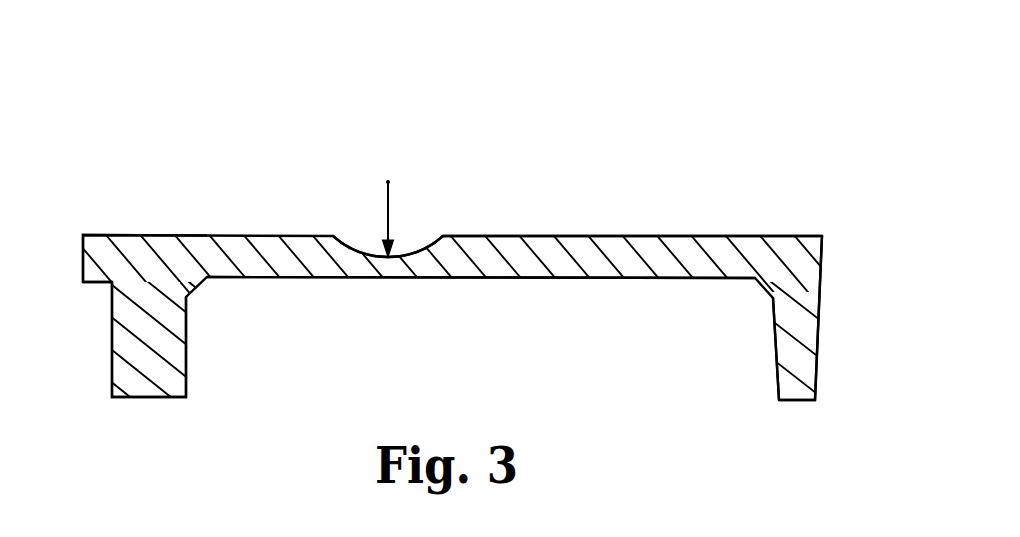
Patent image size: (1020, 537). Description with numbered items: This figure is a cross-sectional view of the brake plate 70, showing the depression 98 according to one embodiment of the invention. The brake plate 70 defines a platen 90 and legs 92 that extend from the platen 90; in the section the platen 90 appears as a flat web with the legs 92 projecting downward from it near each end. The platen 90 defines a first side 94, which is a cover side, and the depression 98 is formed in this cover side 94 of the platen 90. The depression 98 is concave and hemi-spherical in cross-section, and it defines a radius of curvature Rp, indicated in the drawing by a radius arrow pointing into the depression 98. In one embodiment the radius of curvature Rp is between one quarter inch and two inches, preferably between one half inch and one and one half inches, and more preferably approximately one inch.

The brake plate 70 is at (580, 95).
The platen 90 is at (101, 249).
The legs 92 is at (131, 366).
The first side (cover side) 94 is at (689, 236).
The depression 98 is at (351, 234).
The radius of curvature Rp is at (391, 205).